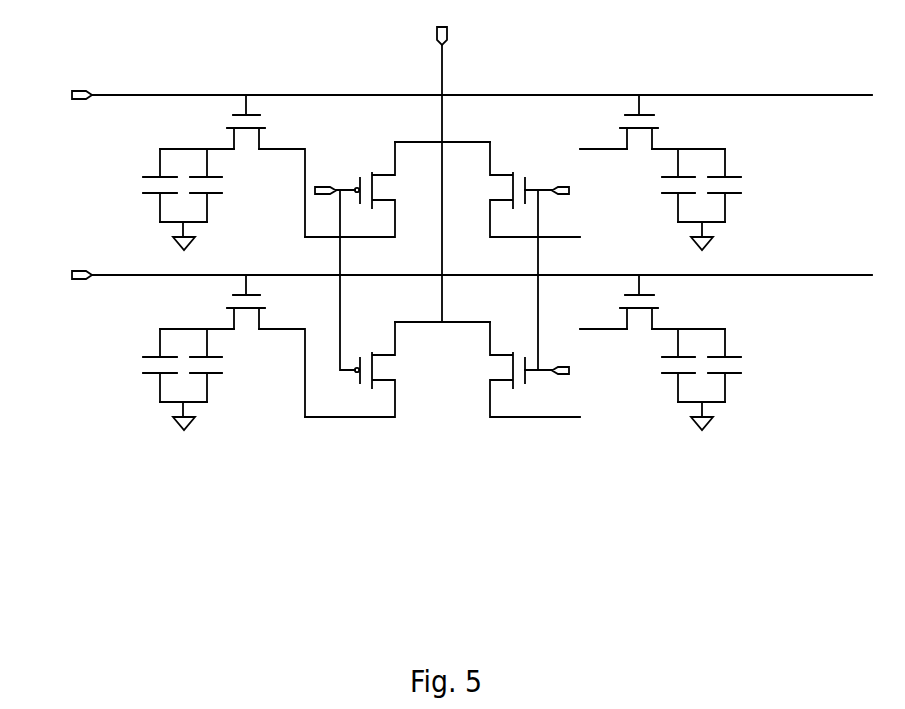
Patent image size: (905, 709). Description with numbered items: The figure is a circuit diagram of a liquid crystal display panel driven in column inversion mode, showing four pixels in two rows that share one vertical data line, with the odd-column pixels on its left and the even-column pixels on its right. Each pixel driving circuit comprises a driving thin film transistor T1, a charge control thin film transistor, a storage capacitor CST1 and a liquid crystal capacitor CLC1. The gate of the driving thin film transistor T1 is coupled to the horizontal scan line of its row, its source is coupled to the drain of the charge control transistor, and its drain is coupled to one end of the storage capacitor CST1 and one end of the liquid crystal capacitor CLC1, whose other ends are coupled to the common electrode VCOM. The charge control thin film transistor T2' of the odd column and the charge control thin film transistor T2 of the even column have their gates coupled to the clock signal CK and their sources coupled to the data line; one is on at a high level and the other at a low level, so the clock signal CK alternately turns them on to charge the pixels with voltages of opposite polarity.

The driving thin film transistor T1 is at (442, 212).
The charge control thin film transistor T2 is at (535, 279).
The charge control thin film transistor T2' is at (350, 279).
The storage capacitor CST1 is at (442, 275).
The liquid crystal capacitor CLC1 is at (442, 275).
The common electrode VCOM is at (463, 332).
The clock signal CK is at (443, 266).